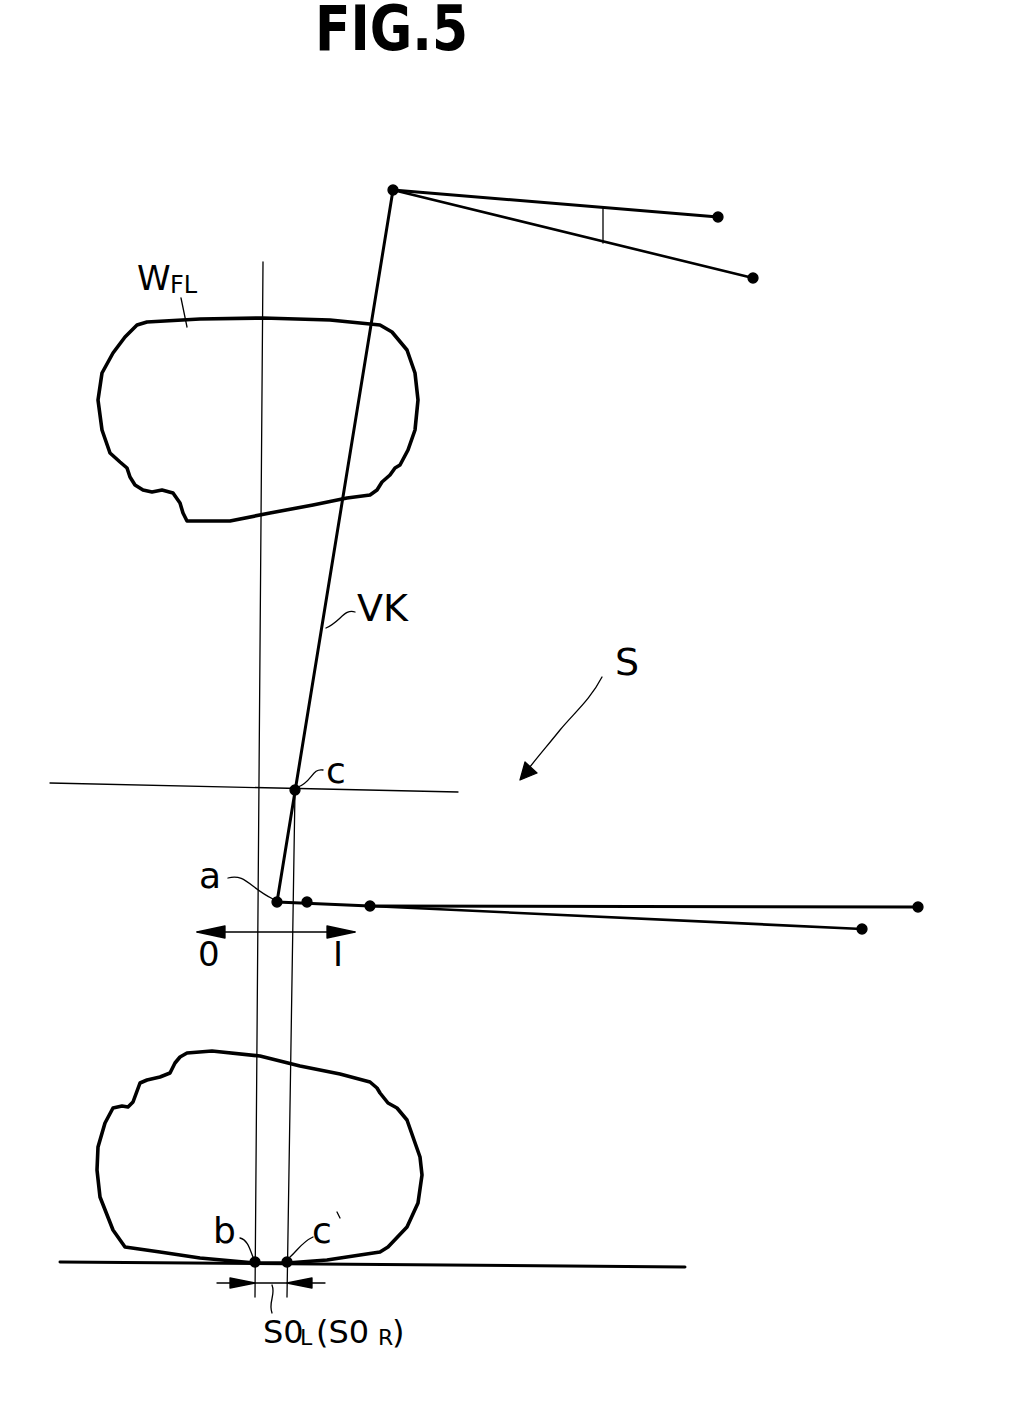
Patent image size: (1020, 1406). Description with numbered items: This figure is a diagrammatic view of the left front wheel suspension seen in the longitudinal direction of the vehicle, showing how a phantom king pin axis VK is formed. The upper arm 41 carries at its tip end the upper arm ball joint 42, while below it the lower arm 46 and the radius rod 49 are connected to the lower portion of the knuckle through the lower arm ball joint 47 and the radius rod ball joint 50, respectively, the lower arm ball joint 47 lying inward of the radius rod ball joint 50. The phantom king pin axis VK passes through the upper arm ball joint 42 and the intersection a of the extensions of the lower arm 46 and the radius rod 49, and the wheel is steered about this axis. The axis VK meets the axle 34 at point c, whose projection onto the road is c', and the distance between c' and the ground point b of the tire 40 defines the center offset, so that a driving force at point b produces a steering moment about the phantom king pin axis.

The axle 34 is at (174, 785).
The tire 40 is at (128, 1108).
The upper arm 41 is at (578, 237).
The upper arm ball joint 42 is at (396, 188).
The lower arm 46 is at (663, 920).
The lower arm ball joint 47 is at (373, 912).
The radius rod 49 is at (736, 903).
The radius rod ball joint 50 is at (308, 897).